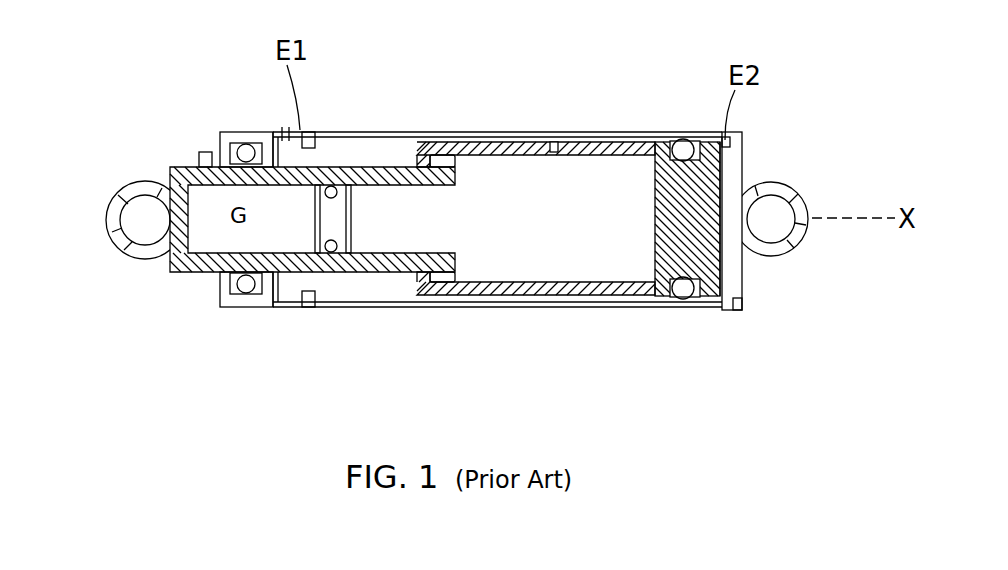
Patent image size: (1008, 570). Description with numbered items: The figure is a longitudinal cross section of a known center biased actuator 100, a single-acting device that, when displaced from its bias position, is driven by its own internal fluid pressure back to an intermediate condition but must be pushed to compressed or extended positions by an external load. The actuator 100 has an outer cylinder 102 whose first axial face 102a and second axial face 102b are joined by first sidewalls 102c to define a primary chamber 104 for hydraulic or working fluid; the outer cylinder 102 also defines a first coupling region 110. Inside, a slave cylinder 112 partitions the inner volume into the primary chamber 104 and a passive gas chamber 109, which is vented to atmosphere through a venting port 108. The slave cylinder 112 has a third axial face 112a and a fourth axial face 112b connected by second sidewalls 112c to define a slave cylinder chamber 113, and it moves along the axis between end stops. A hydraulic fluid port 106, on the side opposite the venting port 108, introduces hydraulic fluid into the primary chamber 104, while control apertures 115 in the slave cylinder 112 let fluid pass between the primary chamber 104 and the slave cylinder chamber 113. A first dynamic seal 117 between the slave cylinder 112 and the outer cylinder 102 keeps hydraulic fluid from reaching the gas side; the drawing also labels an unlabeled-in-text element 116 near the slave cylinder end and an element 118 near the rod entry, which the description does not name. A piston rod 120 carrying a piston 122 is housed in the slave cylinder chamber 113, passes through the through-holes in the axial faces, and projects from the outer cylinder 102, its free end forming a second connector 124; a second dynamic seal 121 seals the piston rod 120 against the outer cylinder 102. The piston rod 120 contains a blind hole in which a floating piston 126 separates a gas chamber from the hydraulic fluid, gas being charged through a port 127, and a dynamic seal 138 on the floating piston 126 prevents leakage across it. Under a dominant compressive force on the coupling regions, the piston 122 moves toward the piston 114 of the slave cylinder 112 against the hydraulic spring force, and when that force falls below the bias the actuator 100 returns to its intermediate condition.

The center biased actuator 100 is at (779, 87).
The outer cylinder 102 is at (484, 126).
The first axial face 102a is at (220, 302).
The second axial face 102b is at (743, 158).
The first sidewalls 102c is at (435, 130).
The primary chamber 104 is at (353, 133).
The hydraulic fluid port 106 is at (285, 128).
The venting port 108 is at (733, 310).
The passive gas chamber 109 is at (737, 273).
The first coupling region 110 is at (780, 182).
The slave cylinder 112 is at (502, 302).
The third axial face 112a is at (417, 153).
The fourth axial face 112b is at (723, 218).
The second sidewalls 112c is at (603, 290).
The slave cylinder chamber 113 is at (578, 268).
The piston of the slave cylinder 114 is at (672, 255).
The control apertures 115 is at (553, 142).
The seal housing 116 is at (607, 142).
The first dynamic seal 117 is at (683, 139).
The rod seal 118 is at (417, 280).
The piston rod 120 is at (280, 253).
The second dynamic seal 121 is at (230, 157).
The piston 122 is at (452, 228).
The second connector 124 is at (107, 210).
The floating piston 126 is at (352, 227).
The port 127 is at (200, 152).
The dynamic seal 138 is at (320, 188).